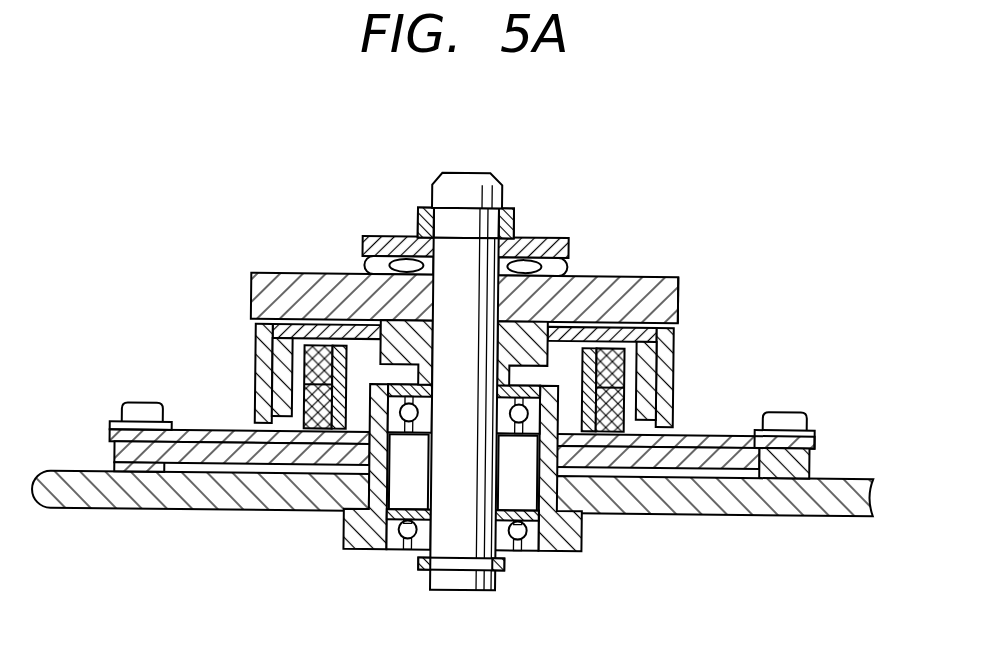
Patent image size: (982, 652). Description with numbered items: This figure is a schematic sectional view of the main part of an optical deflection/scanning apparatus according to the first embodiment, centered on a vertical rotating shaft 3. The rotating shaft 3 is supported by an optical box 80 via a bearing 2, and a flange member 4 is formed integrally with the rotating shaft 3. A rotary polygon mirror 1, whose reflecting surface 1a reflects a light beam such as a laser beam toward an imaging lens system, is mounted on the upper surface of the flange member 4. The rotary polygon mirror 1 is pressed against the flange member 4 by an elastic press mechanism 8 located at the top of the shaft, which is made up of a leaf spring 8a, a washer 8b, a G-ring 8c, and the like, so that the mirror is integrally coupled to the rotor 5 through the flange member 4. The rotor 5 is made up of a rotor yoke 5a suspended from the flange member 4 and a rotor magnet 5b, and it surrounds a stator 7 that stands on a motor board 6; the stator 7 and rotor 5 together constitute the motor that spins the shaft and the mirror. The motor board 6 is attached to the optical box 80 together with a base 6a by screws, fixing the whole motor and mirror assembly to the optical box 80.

The rotary polygon mirror 1 is at (501, 289).
The reflecting surface 1a is at (678, 293).
The bearing 2 is at (351, 514).
The rotating shaft 3 is at (463, 172).
The flange member 4 is at (549, 336).
The rotor 5 is at (529, 375).
The rotor yoke 5a is at (664, 360).
The rotor magnet 5b is at (648, 393).
The motor board 6 is at (494, 440).
The base 6a is at (797, 466).
The stator 7 is at (317, 420).
The elastic press mechanism 8 is at (400, 190).
The leaf spring 8a is at (363, 265).
The washer 8b is at (363, 244).
The G-ring 8c is at (430, 199).
The optical box 80 is at (842, 503).